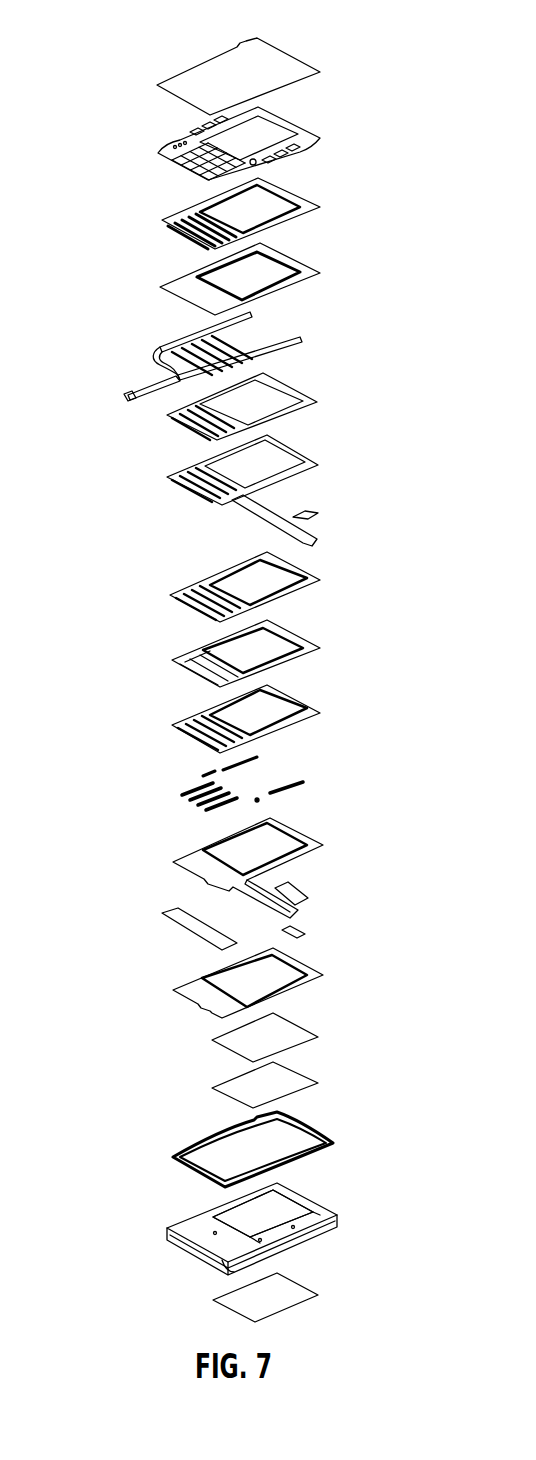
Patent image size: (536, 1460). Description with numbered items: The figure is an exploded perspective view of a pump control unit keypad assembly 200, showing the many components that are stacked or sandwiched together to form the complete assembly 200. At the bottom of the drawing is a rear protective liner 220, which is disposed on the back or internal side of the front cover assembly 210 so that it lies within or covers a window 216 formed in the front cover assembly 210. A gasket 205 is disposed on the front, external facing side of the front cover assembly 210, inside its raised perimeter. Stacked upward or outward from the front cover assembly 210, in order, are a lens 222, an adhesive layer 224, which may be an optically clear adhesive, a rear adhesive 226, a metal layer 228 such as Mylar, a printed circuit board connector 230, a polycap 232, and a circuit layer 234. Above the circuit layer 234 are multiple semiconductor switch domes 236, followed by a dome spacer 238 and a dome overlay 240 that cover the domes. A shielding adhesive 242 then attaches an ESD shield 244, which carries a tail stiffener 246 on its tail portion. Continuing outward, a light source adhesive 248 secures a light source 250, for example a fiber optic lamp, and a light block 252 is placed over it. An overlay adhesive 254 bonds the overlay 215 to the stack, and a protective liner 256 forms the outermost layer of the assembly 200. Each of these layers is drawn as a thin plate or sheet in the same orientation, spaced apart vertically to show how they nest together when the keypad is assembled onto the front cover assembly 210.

The pump control unit keypad assembly 200 is at (322, 38).
The protective liner 256 is at (193, 63).
The overlay 215 is at (297, 135).
The overlay adhesive 254 is at (165, 222).
The light block 252 is at (305, 270).
The light source 250 is at (160, 350).
The light source adhesive 248 is at (305, 395).
The ESD shield 244 is at (185, 468).
The tail stiffener 246 is at (300, 516).
The shielding adhesive 242 is at (190, 585).
The dome overlay 240 is at (312, 650).
The dome spacer 238 is at (185, 722).
The semiconductor switch domes 236 is at (300, 782).
The circuit layer 234 is at (195, 850).
The polycap 232 is at (295, 890).
The printed circuit board connector 230 is at (298, 930).
The metal layer 228 is at (178, 915).
The rear adhesive 226 is at (320, 972).
The adhesive layer 224 is at (292, 1032).
The lens 222 is at (297, 1080).
The gasket 205 is at (337, 1140).
The front cover assembly 210 is at (330, 1210).
The window 216 is at (235, 1222).
The rear protective liner 220 is at (297, 1293).